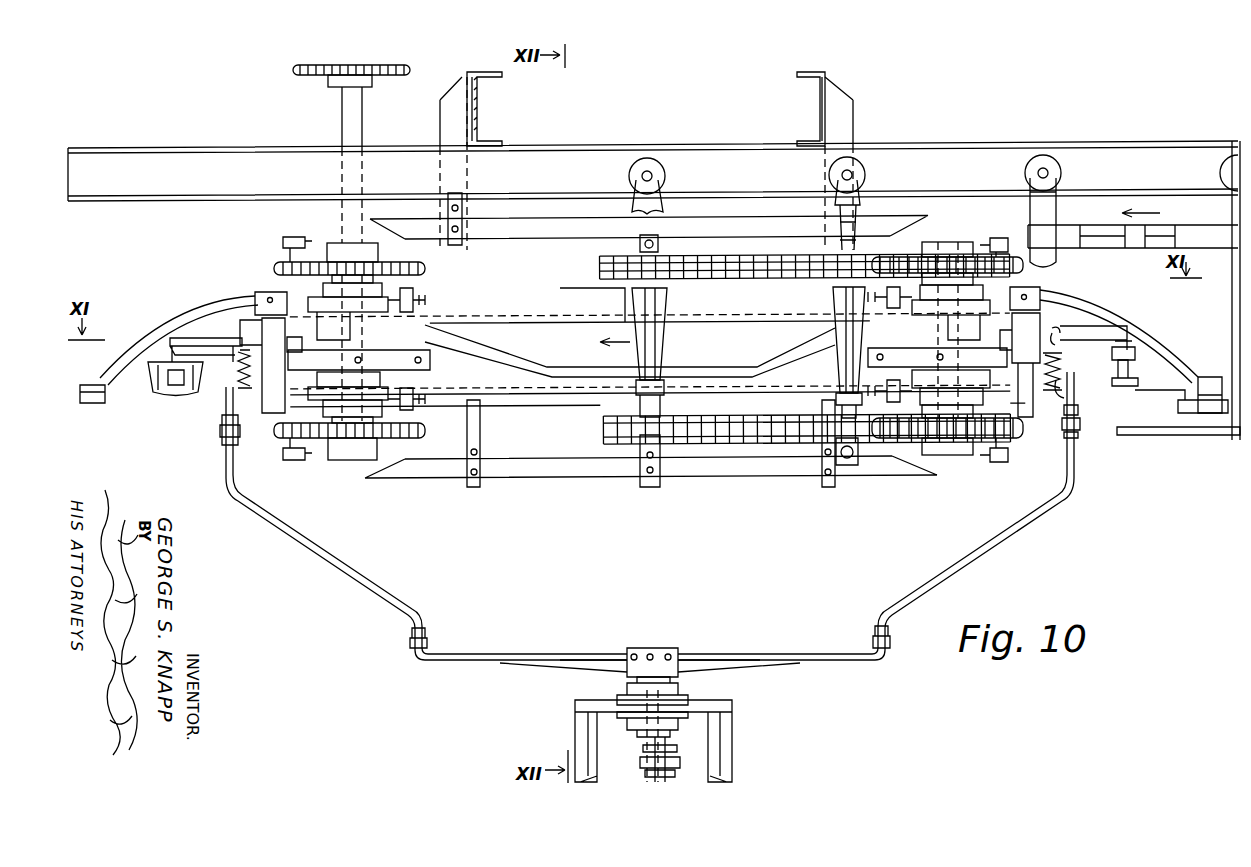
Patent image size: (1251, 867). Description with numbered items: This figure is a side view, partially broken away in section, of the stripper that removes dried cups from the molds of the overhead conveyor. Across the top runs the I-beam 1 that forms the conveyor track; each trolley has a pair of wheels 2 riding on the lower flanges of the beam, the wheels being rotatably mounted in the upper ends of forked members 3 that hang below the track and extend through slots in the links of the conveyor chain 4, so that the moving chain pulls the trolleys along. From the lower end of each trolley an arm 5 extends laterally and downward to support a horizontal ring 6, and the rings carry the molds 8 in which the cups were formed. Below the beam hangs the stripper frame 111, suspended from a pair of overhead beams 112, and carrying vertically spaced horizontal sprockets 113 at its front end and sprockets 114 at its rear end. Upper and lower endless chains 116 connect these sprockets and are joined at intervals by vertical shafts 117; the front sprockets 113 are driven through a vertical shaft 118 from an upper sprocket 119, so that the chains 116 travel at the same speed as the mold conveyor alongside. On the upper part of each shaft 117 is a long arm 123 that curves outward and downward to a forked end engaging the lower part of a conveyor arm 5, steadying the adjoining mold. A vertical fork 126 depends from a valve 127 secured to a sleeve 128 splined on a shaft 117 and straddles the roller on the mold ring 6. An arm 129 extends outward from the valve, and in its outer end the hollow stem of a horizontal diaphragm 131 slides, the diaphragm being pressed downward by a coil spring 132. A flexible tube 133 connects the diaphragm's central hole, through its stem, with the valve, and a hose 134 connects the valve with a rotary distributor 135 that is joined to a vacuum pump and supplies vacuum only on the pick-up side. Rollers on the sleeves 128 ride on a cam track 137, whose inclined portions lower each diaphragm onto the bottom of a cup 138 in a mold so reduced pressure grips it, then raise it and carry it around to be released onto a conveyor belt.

The I-beam 1 is at (232, 150).
The wheels 2 is at (1048, 166).
The forked members 3 is at (1058, 212).
The conveyor chain 4 is at (1090, 250).
The arm 5 is at (1230, 318).
The horizontal ring 6 is at (1178, 410).
The molds 8 is at (1205, 435).
The frame 111 is at (523, 315).
The overhead beams 112 is at (478, 100).
The sprockets 113 is at (333, 245).
The sprockets 114 is at (942, 242).
The endless chains 116 is at (735, 262).
The vertical shafts 117 is at (658, 282).
The vertical shaft 118 is at (350, 130).
The upper sprocket 119 is at (358, 66).
The long arm 123 is at (208, 312).
The vertical fork 126 is at (1072, 400).
The valve 127 is at (235, 365).
The sleeve 128 is at (255, 300).
The arm 129 is at (1072, 348).
The horizontal diaphragm 131 is at (170, 350).
The coil spring 132 is at (1134, 352).
The flexible tube 133 is at (1095, 318).
The hose 134 is at (372, 592).
The rotary distributor 135 is at (668, 648).
The cam track 137 is at (808, 358).
The cup 138 is at (160, 392).